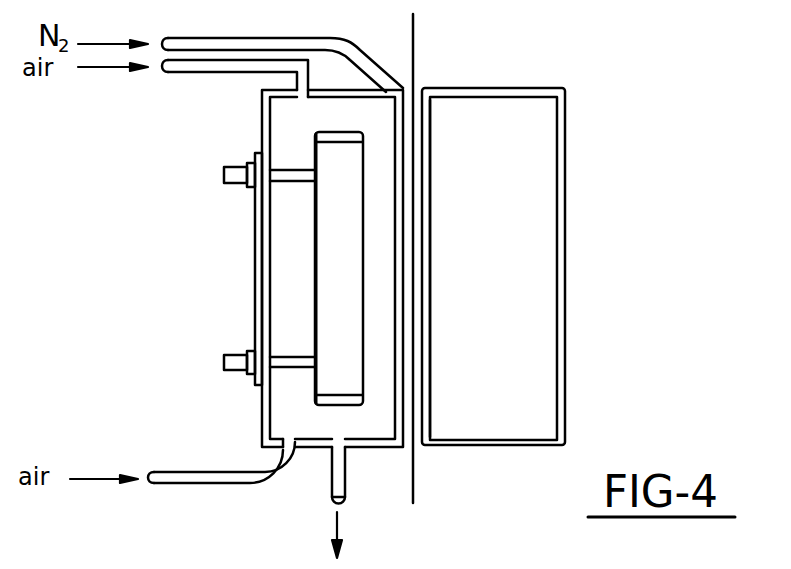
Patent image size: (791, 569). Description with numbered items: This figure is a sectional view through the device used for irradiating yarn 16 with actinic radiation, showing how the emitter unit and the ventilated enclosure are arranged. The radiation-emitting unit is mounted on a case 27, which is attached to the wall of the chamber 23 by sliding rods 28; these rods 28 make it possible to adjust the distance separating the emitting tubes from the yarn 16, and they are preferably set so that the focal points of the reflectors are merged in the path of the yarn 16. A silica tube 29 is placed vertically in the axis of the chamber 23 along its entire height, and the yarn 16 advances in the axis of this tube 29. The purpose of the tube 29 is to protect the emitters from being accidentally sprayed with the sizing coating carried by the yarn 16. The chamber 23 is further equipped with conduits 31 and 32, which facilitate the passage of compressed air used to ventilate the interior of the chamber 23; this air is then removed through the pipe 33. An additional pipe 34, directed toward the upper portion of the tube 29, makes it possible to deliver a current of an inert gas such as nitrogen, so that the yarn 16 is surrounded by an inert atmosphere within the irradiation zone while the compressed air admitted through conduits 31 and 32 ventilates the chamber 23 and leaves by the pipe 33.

The yarn 16 is at (413, 62).
The chamber 23 is at (540, 243).
The case 27 is at (316, 262).
The sliding rods 28 is at (224, 176).
The silica tube 29 is at (430, 352).
The conduit 31 is at (196, 74).
The conduit 32 is at (199, 473).
The pipe 33 is at (345, 494).
The pipe 34 is at (258, 8).